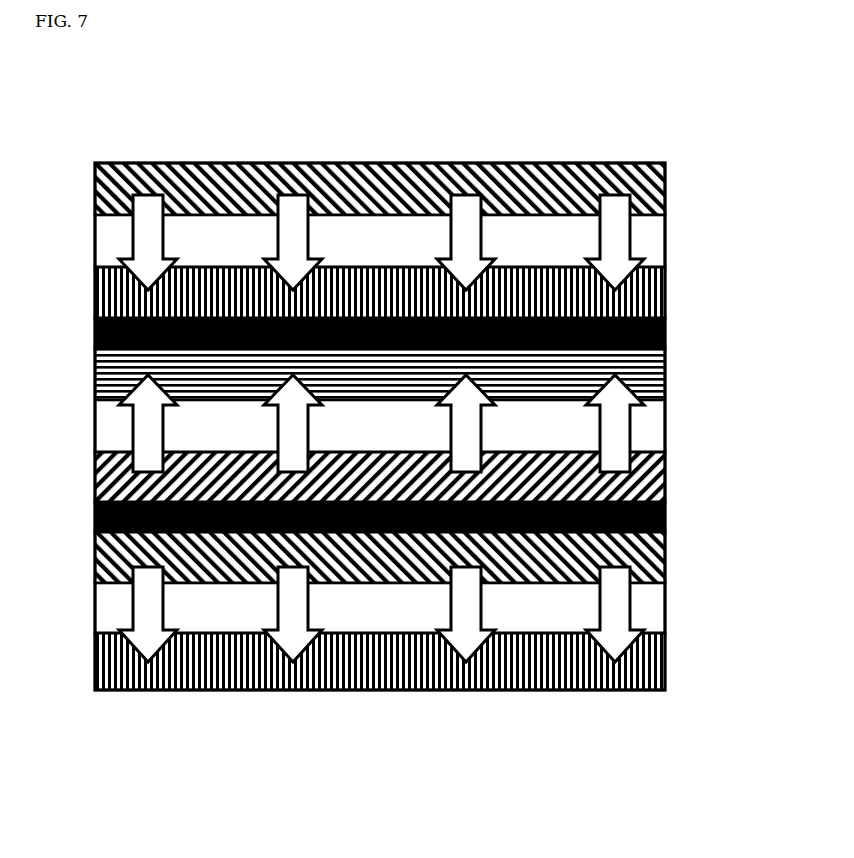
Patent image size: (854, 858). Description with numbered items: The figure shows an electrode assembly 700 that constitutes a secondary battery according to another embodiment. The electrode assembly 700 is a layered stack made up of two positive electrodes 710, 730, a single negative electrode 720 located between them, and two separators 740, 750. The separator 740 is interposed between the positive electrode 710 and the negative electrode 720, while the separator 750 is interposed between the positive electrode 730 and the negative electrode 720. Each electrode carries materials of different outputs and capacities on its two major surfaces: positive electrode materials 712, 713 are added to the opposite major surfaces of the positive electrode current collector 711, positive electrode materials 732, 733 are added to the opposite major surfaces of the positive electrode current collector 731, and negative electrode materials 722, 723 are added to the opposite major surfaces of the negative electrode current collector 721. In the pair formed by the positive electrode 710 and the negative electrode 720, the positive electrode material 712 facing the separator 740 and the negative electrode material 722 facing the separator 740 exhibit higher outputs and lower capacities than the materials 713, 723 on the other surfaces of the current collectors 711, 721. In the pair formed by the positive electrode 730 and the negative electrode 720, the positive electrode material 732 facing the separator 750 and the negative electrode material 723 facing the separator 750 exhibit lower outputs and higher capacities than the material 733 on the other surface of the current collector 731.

The electrode assembly 700 is at (85, 129).
The positive electrode 710 is at (83, 163).
The positive electrode current collector 711 is at (667, 241).
The positive electrode material 712 is at (667, 293).
The positive electrode material 713 is at (667, 185).
The negative electrode 720 is at (83, 350).
The negative electrode current collector 721 is at (667, 426).
The negative electrode material 722 is at (667, 370).
The negative electrode material 723 is at (667, 477).
The positive electrode 730 is at (83, 535).
The positive electrode current collector 731 is at (667, 608).
The positive electrode material 732 is at (667, 555).
The positive electrode material 733 is at (667, 660).
The separator 740 is at (667, 333).
The separator 750 is at (667, 515).